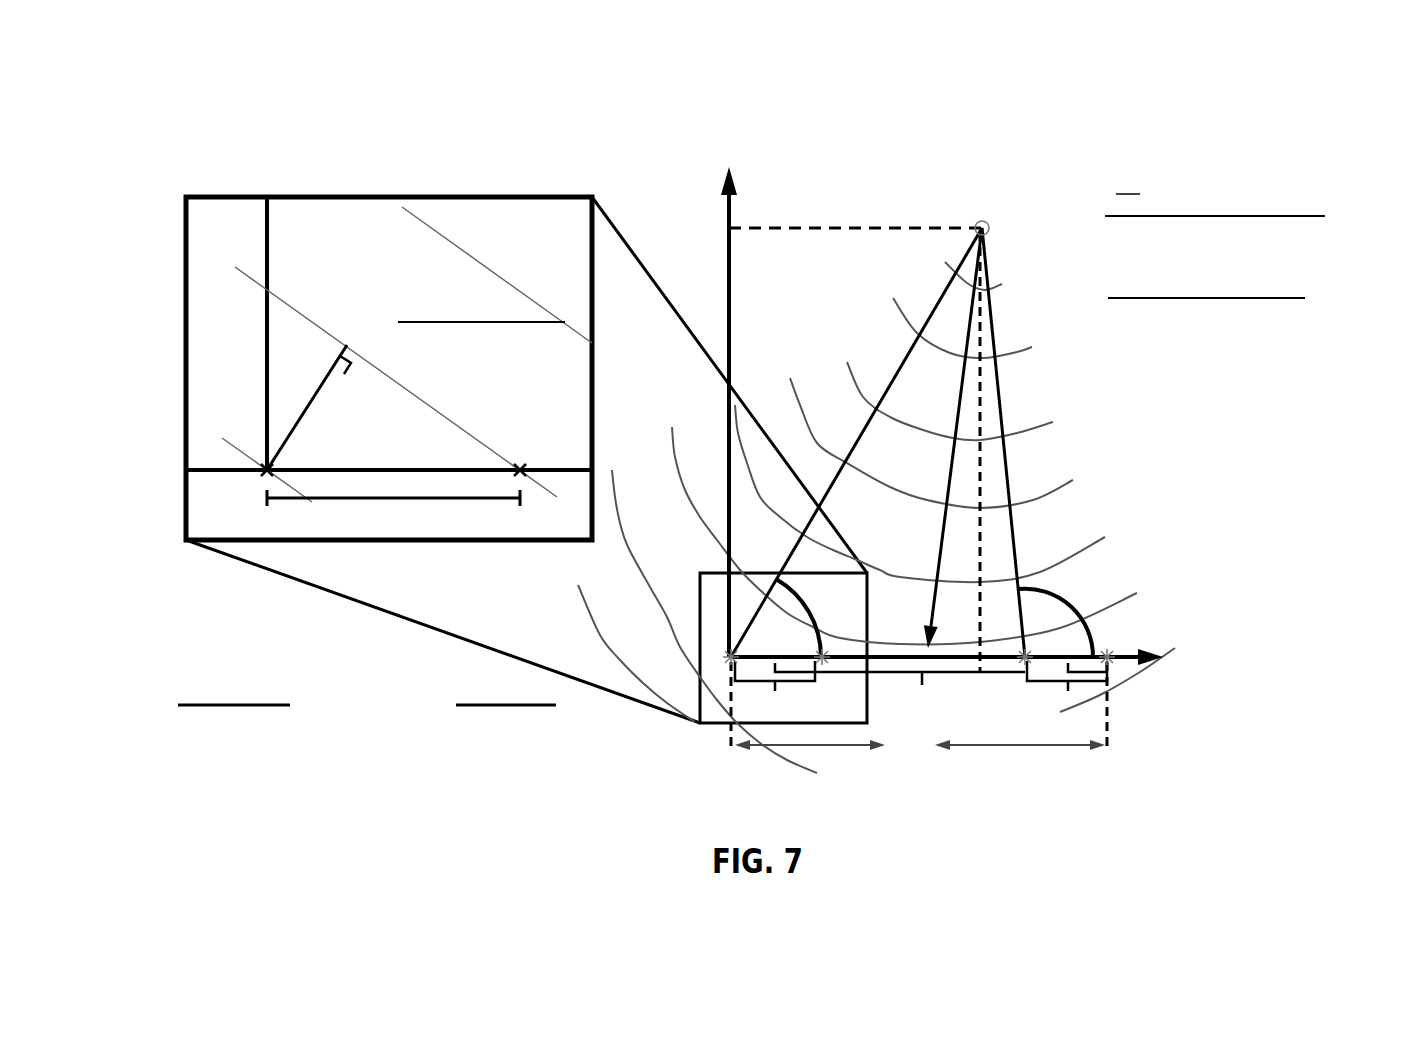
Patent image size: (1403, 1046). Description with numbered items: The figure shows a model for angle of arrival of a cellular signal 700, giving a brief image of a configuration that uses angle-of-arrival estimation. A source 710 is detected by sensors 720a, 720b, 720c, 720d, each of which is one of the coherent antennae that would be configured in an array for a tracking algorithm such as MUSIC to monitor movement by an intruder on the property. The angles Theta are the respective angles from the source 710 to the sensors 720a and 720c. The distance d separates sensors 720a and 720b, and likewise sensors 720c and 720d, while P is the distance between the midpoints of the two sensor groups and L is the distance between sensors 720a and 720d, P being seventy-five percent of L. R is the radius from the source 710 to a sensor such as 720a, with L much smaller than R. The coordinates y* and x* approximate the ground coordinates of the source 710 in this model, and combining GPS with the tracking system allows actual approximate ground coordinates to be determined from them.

The model for angle of arrival of a cellular signal 700 is at (591, 104).
The source 710 is at (962, 216).
The sensor 720a is at (727, 664).
The sensor 720b is at (822, 664).
The sensor 720c is at (1023, 664).
The sensor 720d is at (1116, 668).